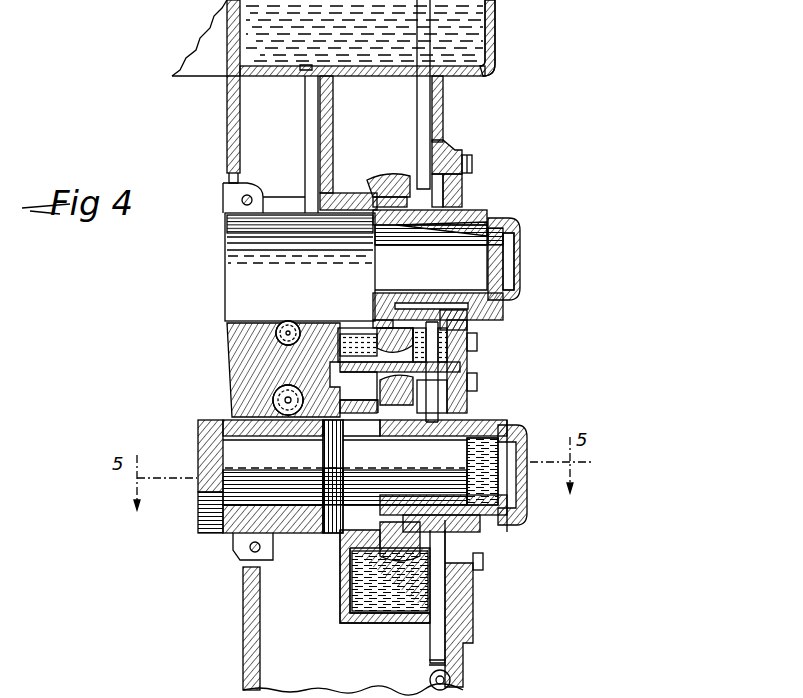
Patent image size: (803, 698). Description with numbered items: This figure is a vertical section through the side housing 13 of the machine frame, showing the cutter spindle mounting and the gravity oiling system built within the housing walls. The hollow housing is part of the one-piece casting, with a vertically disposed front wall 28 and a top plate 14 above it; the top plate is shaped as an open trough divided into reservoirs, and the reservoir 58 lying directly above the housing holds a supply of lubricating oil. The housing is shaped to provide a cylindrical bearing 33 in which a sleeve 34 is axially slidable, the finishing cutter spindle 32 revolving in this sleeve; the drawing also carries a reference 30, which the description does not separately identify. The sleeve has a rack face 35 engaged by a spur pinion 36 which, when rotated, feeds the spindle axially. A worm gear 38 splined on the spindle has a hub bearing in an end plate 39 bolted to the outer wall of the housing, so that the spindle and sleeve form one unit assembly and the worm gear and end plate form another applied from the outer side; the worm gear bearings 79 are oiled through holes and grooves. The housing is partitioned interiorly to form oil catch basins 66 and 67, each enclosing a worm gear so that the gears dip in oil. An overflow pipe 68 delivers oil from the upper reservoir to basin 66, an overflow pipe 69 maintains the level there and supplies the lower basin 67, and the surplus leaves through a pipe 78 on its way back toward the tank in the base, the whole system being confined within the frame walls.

The reservoir 58 is at (480, 14).
The top plate 14 is at (215, 70).
The overflow pipe 68 is at (424, 93).
The side housing 13 is at (444, 108).
The end plate 39 is at (454, 190).
The worm gear 38 is at (383, 160).
The cylindrical bearing 33 is at (363, 296).
The spur pinion 36 is at (288, 321).
The rack face 35 is at (264, 412).
The oil catch basin 66 is at (425, 318).
The overflow pipe 69 is at (438, 344).
The worm gear bearing 79 is at (514, 428).
The lower cylinder 30 is at (290, 438).
The finishing cutter spindle 32 is at (245, 459).
The sleeve 34 is at (300, 530).
The oil catch basin 67 is at (352, 598).
The pipe 78 is at (440, 638).
The front wall 28 is at (353, 631).